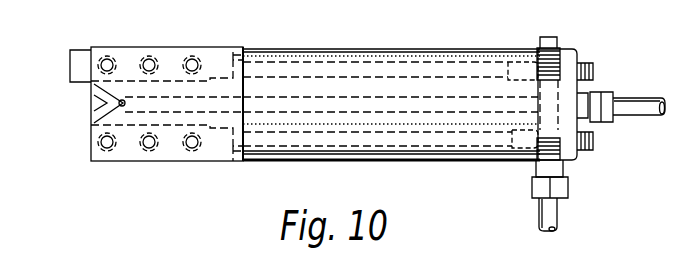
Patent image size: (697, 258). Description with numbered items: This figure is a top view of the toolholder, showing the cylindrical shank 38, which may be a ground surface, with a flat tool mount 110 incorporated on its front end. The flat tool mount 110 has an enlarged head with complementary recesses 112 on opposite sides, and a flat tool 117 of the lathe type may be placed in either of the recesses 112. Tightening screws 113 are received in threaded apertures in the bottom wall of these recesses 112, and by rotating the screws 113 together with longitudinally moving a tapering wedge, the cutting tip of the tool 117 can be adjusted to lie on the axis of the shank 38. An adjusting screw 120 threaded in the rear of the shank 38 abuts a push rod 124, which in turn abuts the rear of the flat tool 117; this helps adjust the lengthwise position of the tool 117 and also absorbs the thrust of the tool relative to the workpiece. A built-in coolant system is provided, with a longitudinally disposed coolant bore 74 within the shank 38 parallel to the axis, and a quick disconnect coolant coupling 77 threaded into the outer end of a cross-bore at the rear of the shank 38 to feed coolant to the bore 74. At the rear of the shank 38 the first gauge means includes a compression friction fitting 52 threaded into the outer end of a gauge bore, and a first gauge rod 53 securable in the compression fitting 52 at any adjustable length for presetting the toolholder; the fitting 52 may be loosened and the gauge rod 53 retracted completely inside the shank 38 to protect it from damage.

The flat tool mount 110 is at (243, 47).
The complementary recesses 112 is at (165, 82).
The tightening screws 113 is at (147, 151).
The flat tool 117 is at (70, 68).
The cylindrical shank 38 is at (352, 50).
The push rod 124 is at (418, 62).
The coolant bore 74 is at (333, 97).
The adjusting screw 120 is at (579, 64).
The compression friction fitting 52 is at (610, 123).
The first gauge rod 53 is at (660, 116).
The quick disconnect coolant coupling 77 is at (568, 186).